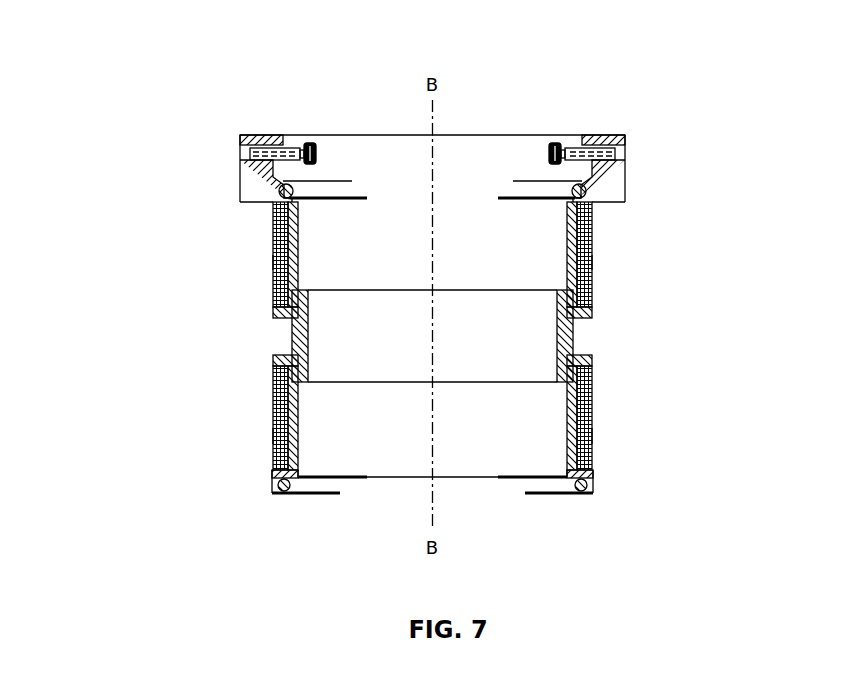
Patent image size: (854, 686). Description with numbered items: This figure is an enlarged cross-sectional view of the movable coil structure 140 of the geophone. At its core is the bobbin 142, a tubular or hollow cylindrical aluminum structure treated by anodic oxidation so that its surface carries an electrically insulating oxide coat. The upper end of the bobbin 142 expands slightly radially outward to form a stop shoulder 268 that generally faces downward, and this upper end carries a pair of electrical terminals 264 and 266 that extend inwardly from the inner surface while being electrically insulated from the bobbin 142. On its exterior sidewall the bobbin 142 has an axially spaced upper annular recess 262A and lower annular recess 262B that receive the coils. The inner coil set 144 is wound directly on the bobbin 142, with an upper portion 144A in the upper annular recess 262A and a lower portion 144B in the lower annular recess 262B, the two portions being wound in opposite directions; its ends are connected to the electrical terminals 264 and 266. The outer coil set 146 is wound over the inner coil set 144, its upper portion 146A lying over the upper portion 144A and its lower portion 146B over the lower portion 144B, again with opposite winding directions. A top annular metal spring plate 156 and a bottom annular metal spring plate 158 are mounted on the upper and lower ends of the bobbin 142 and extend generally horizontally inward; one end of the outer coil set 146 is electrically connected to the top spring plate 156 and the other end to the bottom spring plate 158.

The movable coil structure 140 is at (724, 61).
The bobbin 142 is at (296, 336).
The inner coil set 144 is at (272, 415).
The upper portion of inner coil set 144A is at (272, 229).
The lower portion of inner coil set 144B is at (272, 463).
The outer coil set 146 is at (272, 380).
The upper portion of outer coil set 146A is at (272, 247).
The lower portion of outer coil set 146B is at (272, 455).
The top annular metal spring plate 156 is at (357, 198).
The bottom annular metal spring plate 158 is at (357, 480).
The upper annular recess 262A is at (252, 263).
The lower annular recess 262B is at (252, 435).
The electrical terminal 264 is at (291, 153).
The electrical terminal 266 is at (574, 153).
The stop shoulder 268 is at (262, 206).